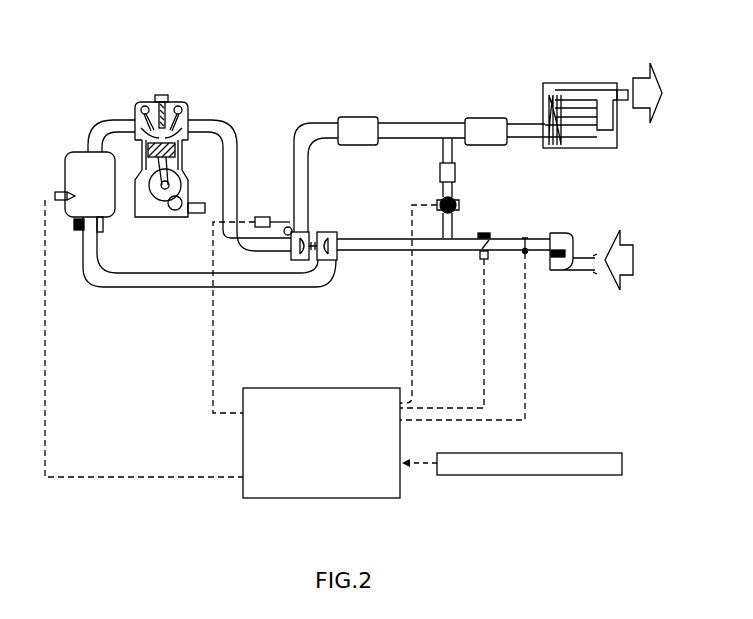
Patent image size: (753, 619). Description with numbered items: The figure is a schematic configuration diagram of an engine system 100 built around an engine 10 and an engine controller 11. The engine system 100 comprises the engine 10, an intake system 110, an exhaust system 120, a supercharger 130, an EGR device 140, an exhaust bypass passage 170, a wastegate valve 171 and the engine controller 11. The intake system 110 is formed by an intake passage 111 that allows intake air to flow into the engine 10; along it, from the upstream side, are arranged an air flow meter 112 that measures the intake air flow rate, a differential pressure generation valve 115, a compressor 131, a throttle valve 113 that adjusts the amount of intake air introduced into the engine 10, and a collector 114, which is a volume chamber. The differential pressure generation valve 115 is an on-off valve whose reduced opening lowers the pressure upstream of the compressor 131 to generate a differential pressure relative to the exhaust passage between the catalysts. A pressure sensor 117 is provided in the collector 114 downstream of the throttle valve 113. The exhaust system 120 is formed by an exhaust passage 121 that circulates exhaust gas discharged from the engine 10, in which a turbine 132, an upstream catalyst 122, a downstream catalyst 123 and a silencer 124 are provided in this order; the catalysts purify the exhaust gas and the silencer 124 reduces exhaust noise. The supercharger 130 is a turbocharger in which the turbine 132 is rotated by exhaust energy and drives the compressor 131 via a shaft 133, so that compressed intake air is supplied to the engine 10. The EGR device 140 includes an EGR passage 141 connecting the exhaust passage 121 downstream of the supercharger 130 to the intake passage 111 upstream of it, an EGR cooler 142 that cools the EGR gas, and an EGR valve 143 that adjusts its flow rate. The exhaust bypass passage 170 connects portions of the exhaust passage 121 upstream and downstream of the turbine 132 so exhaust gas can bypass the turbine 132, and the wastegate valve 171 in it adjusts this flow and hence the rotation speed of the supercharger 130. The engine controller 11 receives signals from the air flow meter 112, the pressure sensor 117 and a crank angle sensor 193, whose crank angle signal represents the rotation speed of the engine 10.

The engine system 100 is at (203, 50).
The engine 10 is at (158, 218).
The engine controller 11 is at (318, 499).
The intake system 110 is at (600, 292).
The intake passage 111 is at (384, 254).
The air flow meter 112 is at (527, 254).
The throttle valve 113 is at (104, 225).
The collector 114 is at (70, 152).
The differential pressure generation valve 115 is at (490, 234).
The pressure sensor 117 is at (56, 194).
The exhaust system 120 is at (240, 127).
The exhaust passage 121 is at (240, 169).
The upstream catalyst 122 is at (358, 117).
The downstream catalyst 123 is at (485, 118).
The silencer 124 is at (580, 83).
The supercharger 130 is at (375, 337).
The compressor 131 is at (316, 256).
The turbine 132 is at (303, 262).
The shaft 133 is at (322, 262).
The EGR device 140 is at (386, 168).
The EGR passage 141 is at (442, 149).
The EGR cooler 142 is at (440, 170).
The EGR valve 143 is at (440, 205).
The exhaust bypass passage 170 is at (290, 222).
The wastegate valve 171 is at (295, 222).
The crank angle sensor 193 is at (622, 463).